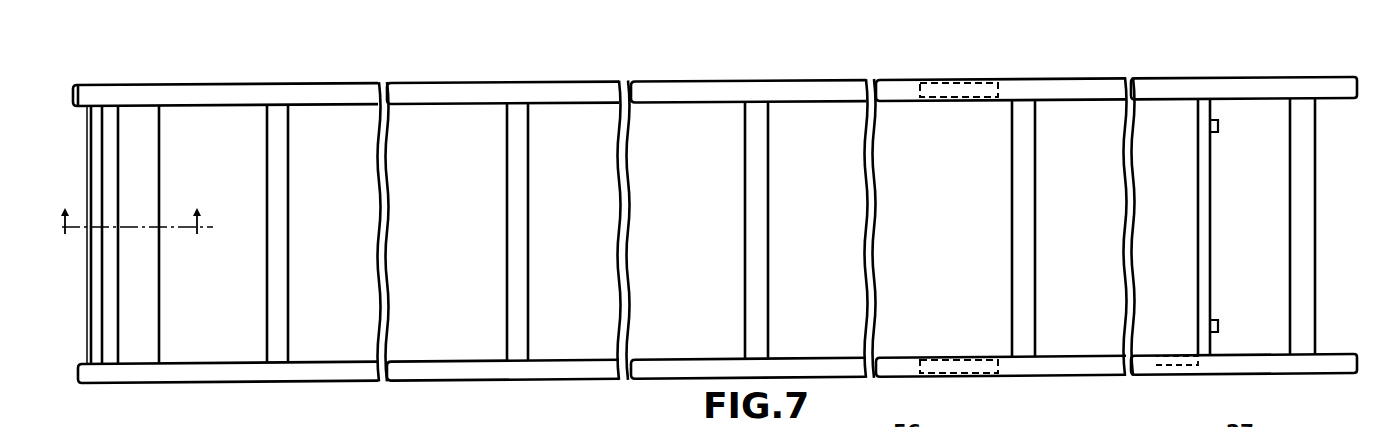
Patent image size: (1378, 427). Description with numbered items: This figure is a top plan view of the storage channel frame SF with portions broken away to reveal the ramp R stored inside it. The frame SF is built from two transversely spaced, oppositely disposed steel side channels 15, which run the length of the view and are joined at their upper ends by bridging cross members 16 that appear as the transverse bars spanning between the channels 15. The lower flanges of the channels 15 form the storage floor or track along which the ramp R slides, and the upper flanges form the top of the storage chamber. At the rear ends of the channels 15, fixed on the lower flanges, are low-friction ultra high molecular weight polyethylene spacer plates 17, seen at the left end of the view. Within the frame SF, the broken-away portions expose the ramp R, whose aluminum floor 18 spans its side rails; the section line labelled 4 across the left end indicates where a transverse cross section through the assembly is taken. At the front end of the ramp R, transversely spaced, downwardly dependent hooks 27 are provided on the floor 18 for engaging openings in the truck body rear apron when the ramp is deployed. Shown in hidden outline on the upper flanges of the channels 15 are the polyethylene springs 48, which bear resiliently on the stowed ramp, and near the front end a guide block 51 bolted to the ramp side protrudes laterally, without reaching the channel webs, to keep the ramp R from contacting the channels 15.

The ramp assembly R is at (303, 78).
The storage channel frame SF is at (440, 96).
The section line 4- 4 is at (135, 237).
The side channels 15 is at (1086, 369).
The bridging cross members 16 is at (150, 305).
The spacer plates 17 is at (79, 381).
The floor 18 is at (708, 118).
The hooks 27 is at (1219, 126).
The springs 48 is at (957, 78).
The guide blocks 51 is at (1177, 354).